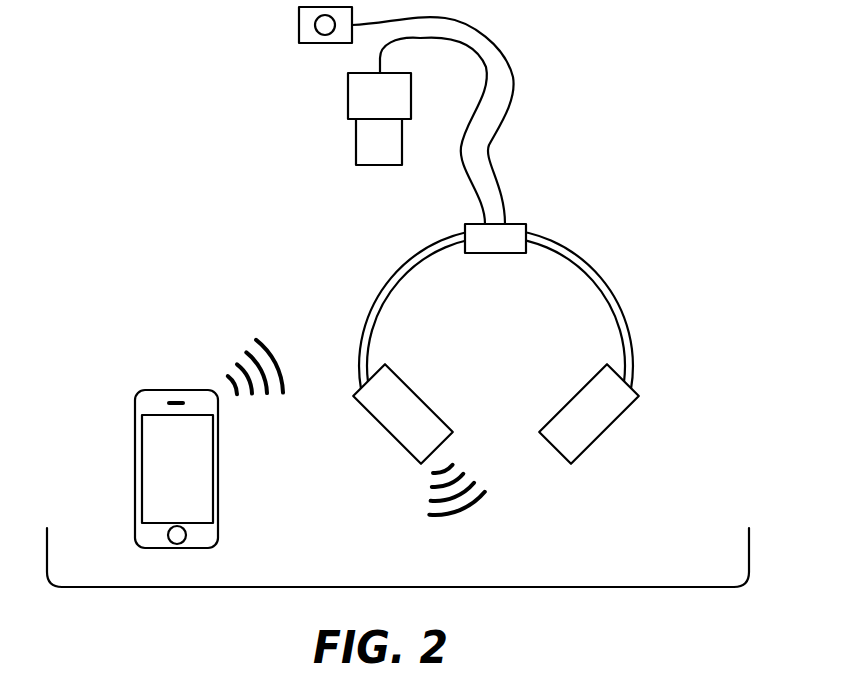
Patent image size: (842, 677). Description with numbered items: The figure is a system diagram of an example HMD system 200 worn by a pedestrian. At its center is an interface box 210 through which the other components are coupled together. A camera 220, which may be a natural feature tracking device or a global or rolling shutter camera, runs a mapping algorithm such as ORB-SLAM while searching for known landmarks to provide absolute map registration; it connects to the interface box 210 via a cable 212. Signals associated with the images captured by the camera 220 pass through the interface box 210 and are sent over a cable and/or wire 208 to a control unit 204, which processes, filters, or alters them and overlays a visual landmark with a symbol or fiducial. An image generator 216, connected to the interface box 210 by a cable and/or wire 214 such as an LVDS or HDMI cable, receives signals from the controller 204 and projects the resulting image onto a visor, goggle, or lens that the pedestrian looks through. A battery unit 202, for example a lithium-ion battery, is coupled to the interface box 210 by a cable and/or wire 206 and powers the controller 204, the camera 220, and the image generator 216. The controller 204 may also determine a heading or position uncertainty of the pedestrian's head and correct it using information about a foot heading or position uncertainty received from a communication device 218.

The HMD system 200 is at (632, 72).
The battery unit 202 is at (592, 418).
The control unit 204 is at (420, 408).
The cable and/or wire 206 is at (633, 342).
The cable and/or wire 208 is at (380, 292).
The interface box 210 is at (523, 233).
The cable 212 is at (502, 180).
The cable and/or wire 214 is at (472, 187).
The image generator 216 is at (355, 105).
The communication device 218 is at (153, 473).
The camera 220 is at (303, 33).